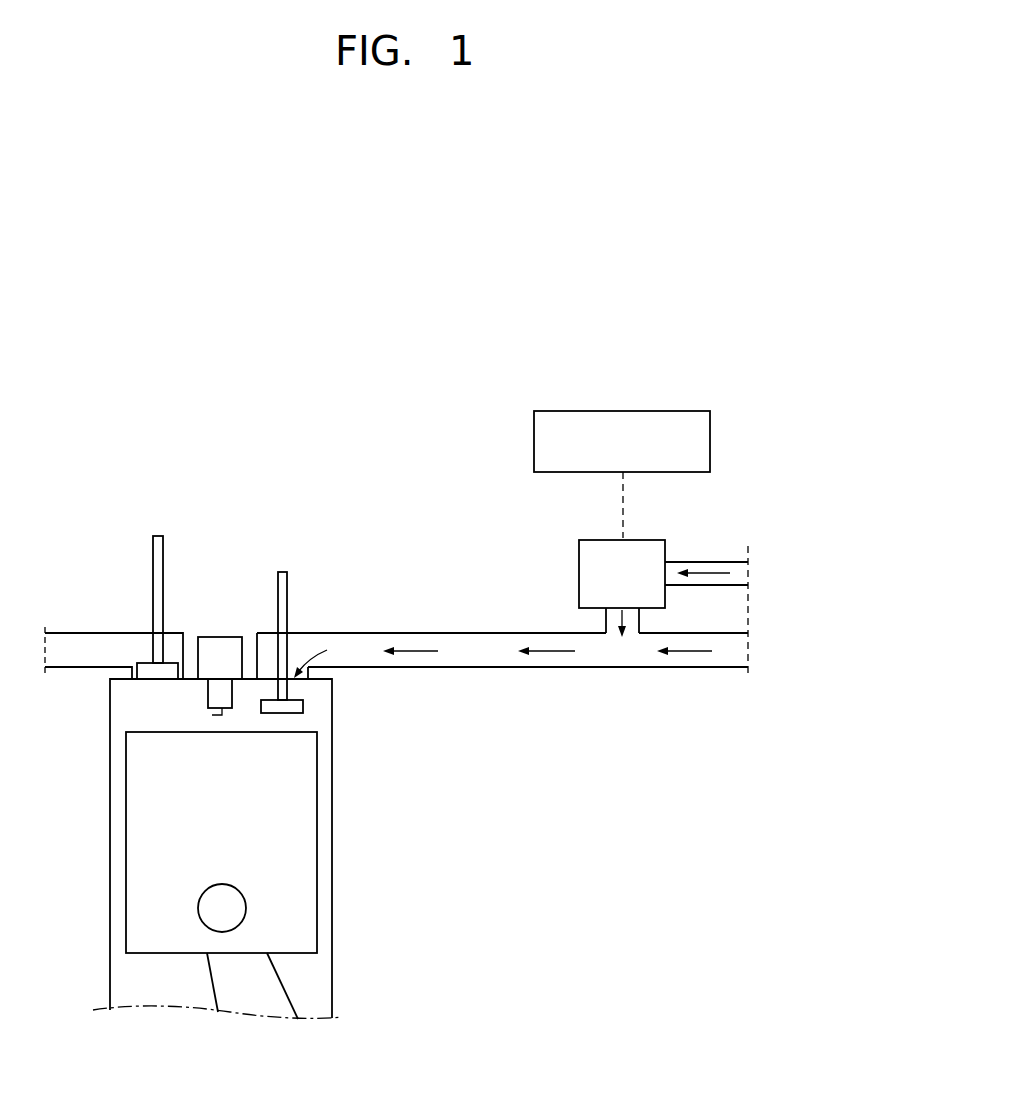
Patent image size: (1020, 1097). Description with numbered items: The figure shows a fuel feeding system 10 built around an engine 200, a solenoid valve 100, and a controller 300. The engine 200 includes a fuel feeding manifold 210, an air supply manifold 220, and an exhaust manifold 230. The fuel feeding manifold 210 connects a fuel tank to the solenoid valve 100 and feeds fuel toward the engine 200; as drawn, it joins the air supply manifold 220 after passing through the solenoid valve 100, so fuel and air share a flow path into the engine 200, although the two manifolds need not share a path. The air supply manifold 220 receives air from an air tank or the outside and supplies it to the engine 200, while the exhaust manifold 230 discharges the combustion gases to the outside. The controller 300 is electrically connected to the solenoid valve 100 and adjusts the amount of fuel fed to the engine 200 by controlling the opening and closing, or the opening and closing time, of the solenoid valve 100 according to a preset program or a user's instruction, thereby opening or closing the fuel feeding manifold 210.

The fuel feeding system 10 is at (113, 346).
The solenoid valve 100 is at (650, 540).
The engine 200 is at (353, 847).
The fuel feeding manifold 210 is at (725, 585).
The air supply manifold 220 is at (725, 667).
The exhaust manifold 230 is at (88, 643).
The controller 300 is at (649, 411).